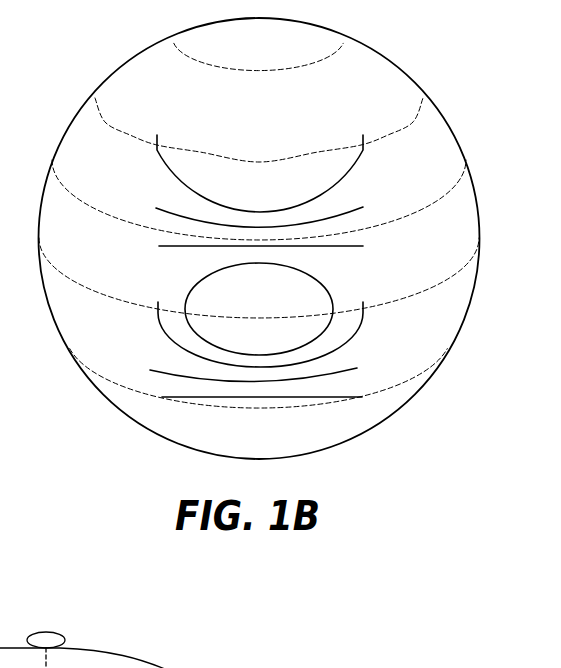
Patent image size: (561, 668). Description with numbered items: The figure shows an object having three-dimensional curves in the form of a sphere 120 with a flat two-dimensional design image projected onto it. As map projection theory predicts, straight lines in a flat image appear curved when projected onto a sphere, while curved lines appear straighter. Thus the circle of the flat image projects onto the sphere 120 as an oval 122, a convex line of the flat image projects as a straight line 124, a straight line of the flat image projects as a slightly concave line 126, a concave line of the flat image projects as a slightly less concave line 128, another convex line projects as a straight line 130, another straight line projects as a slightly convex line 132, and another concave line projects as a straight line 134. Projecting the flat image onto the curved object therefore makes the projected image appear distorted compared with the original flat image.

The sphere 120 is at (107, 79).
The oval 122 is at (195, 287).
The straight line 124 is at (162, 397).
The slightly concave line 126 is at (152, 370).
The slightly less concave line 128 is at (158, 318).
The straight line 130 is at (159, 246).
The slightly convex line 132 is at (156, 208).
The straight line 134 is at (157, 145).